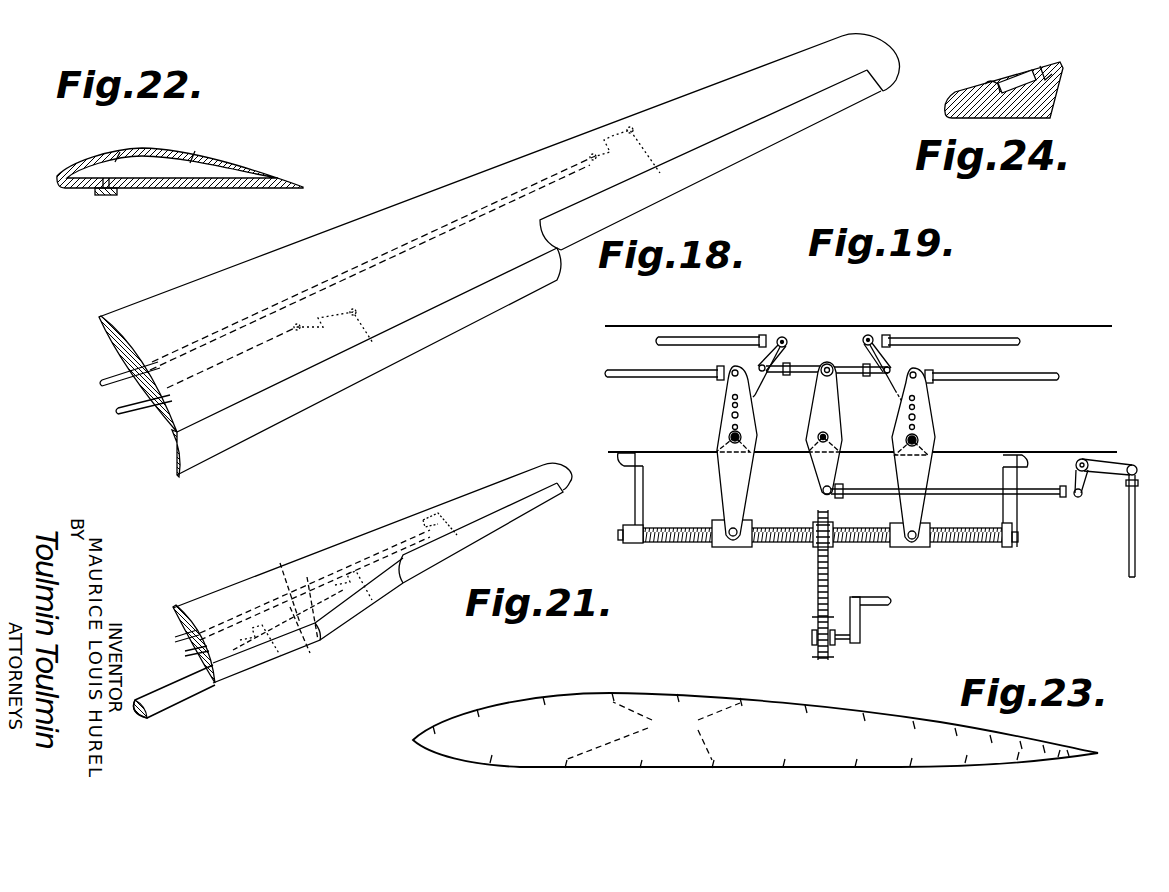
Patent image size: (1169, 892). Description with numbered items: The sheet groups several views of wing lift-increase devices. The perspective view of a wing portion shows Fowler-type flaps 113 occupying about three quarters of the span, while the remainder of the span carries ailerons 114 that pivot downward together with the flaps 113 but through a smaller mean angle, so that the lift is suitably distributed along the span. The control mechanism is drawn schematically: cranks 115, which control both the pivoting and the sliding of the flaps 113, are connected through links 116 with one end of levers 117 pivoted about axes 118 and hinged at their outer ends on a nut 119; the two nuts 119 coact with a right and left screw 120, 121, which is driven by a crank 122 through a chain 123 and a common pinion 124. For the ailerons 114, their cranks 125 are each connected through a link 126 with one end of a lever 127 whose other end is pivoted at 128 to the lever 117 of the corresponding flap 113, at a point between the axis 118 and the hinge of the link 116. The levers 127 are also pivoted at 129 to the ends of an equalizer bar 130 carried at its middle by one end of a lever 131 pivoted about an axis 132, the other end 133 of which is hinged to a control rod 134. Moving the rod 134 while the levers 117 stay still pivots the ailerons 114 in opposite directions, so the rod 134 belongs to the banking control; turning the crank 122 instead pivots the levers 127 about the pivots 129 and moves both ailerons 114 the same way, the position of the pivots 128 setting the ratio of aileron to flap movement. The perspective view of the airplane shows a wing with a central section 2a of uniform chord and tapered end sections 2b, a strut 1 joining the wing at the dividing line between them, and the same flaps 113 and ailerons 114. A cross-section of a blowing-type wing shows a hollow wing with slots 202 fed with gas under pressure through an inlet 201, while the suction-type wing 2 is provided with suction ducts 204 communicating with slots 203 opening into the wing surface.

In FIG. 21, the strut 1 is at (165, 682).
In FIG. 22, the wing 2 is at (270, 174).
In FIG. 24, the wing 2 is at (1052, 66).
In FIG. 18, the wing 2 is at (695, 122).
In FIG. 23, the wing 2 is at (900, 715).
In FIG. 21, the central wing section 2a is at (262, 575).
In FIG. 21, the tapered end wing sections 2b is at (361, 533).
In FIG. 18, the flaps 113 is at (455, 310).
In FIG. 21, the flaps 113 is at (278, 647).
In FIG. 18, the ailerons 114 is at (775, 130).
In FIG. 21, the ailerons 114 is at (517, 510).
In FIG. 18, the cranks 115 is at (356, 352).
In FIG. 21, the cranks 115 is at (250, 645).
In FIG. 18, the links 116 is at (252, 418).
In FIG. 19, the links 116 is at (643, 373).
In FIG. 21, the links 116 is at (319, 637).
In FIG. 19, the levers 117 is at (727, 432).
In FIG. 19, the axes 118 is at (727, 440).
In FIG. 19, the nut 119 is at (723, 543).
In FIG. 19, the right and left screw 120 is at (767, 540).
In FIG. 19, the right and left screw 121 is at (965, 547).
In FIG. 19, the crank 122 is at (890, 604).
In FIG. 19, the chain 123 is at (816, 587).
In FIG. 19, the common pinion 124 is at (828, 528).
In FIG. 18, the cranks 125 is at (607, 128).
In FIG. 21, the cranks 125 is at (430, 512).
In FIG. 18, the link 126 is at (437, 225).
In FIG. 19, the link 126 is at (738, 340).
In FIG. 21, the link 126 is at (228, 618).
In FIG. 19, the lever 127 is at (867, 343).
In FIG. 19, the pivot 128 is at (732, 415).
In FIG. 19, the pivot 129 is at (766, 364).
In FIG. 19, the equalizer bar 130 is at (805, 370).
In FIG. 19, the lever 131 is at (827, 400).
In FIG. 19, the axis 132 is at (827, 437).
In FIG. 19, the end 133 is at (823, 490).
In FIG. 19, the control rod 134 is at (1055, 495).
In FIG. 22, the inlet 201 is at (102, 195).
In FIG. 22, the slots 202 is at (193, 157).
In FIG. 24, the slots 203 is at (993, 80).
In FIG. 23, the slots 203 is at (652, 731).
In FIG. 24, the suction ducts 204 is at (1020, 75).